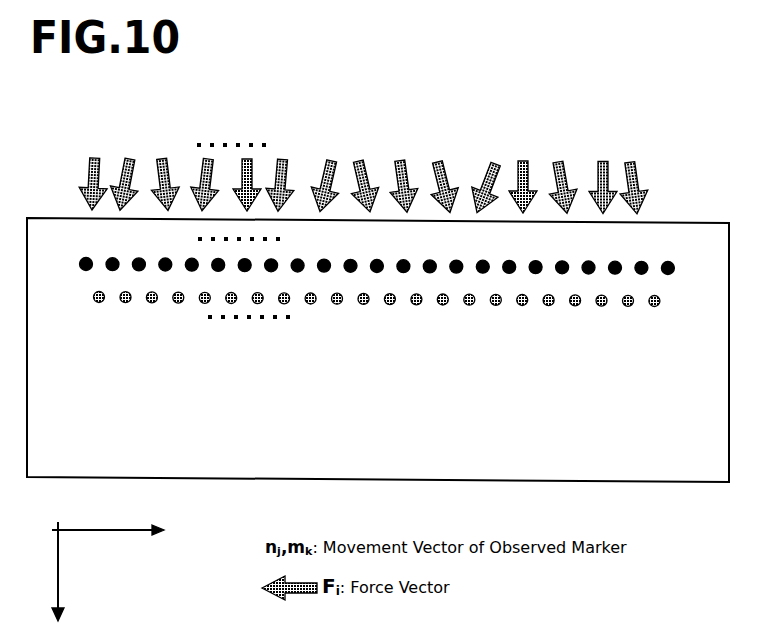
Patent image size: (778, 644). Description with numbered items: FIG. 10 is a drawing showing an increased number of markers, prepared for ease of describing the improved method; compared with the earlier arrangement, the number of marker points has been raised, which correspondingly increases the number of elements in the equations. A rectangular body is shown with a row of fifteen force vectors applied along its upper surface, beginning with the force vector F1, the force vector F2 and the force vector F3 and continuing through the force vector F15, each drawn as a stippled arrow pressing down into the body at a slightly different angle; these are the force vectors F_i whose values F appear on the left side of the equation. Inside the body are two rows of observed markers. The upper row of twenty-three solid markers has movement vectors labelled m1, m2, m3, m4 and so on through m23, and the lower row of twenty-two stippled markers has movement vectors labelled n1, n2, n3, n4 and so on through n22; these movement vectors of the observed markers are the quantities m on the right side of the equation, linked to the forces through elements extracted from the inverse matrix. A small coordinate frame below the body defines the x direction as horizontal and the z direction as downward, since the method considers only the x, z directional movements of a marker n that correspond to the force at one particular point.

The force vector F1 is at (93, 172).
The force vector F2 is at (127, 173).
The force vector F3 is at (167, 172).
The force vector F15 is at (633, 174).
The movement vector of observed marker m1 is at (78, 249).
The movement vector of observed marker m2 is at (106, 249).
The movement vector of observed marker m3 is at (138, 249).
The movement vector of observed marker m4 is at (172, 249).
The movement vector of observed marker m23 is at (681, 254).
The movement vector of observed marker n1 is at (98, 311).
The movement vector of observed marker n2 is at (128, 311).
The movement vector of observed marker n3 is at (157, 311).
The movement vector of observed marker n4 is at (185, 311).
The movement vector of observed marker n22 is at (664, 315).
The x direction x is at (108, 543).
The z direction z is at (64, 573).